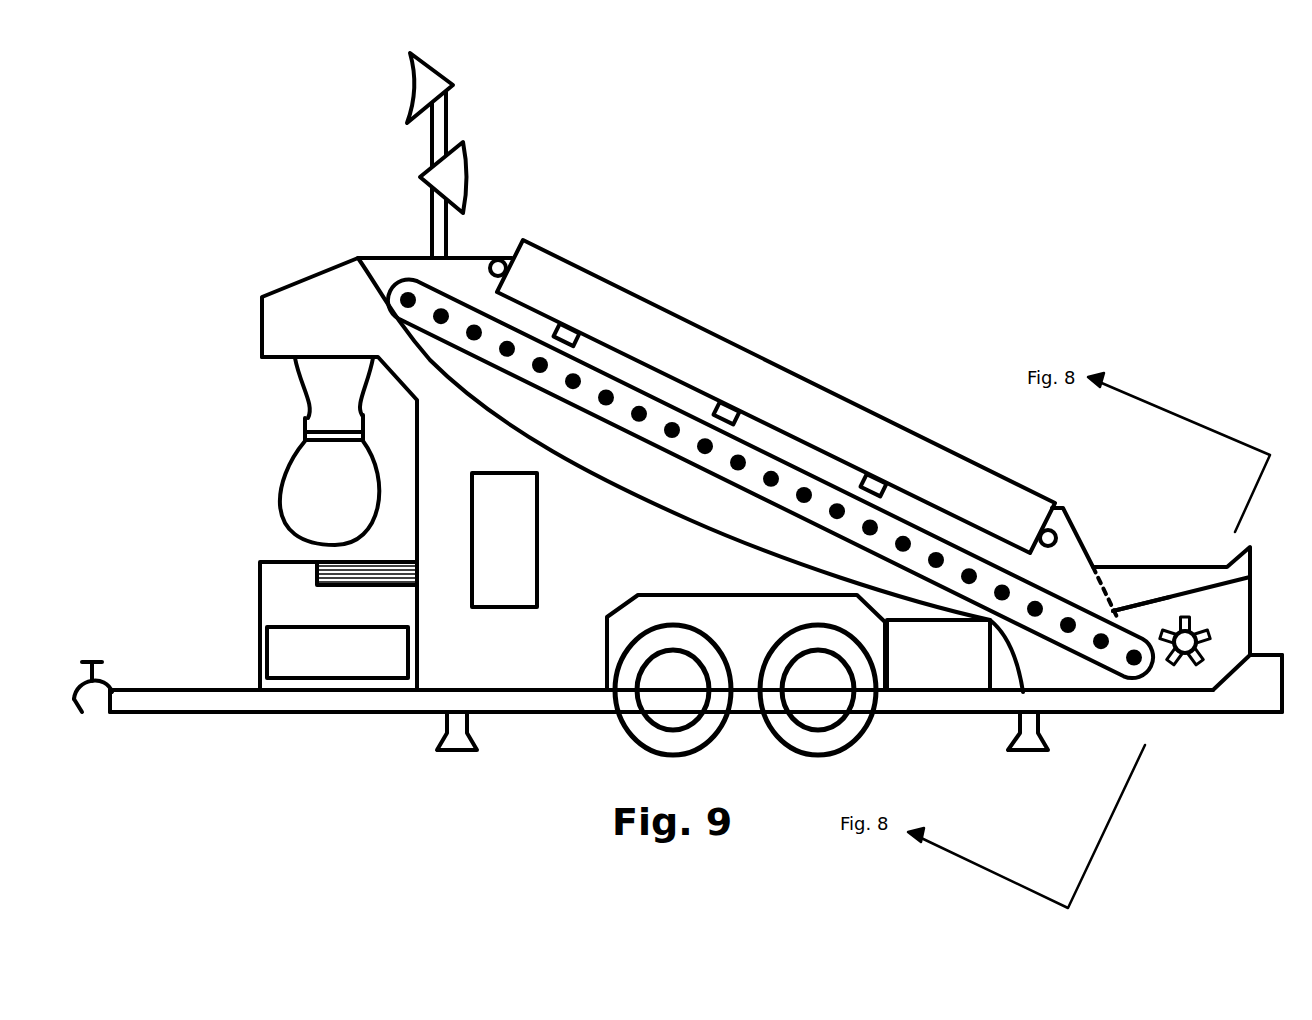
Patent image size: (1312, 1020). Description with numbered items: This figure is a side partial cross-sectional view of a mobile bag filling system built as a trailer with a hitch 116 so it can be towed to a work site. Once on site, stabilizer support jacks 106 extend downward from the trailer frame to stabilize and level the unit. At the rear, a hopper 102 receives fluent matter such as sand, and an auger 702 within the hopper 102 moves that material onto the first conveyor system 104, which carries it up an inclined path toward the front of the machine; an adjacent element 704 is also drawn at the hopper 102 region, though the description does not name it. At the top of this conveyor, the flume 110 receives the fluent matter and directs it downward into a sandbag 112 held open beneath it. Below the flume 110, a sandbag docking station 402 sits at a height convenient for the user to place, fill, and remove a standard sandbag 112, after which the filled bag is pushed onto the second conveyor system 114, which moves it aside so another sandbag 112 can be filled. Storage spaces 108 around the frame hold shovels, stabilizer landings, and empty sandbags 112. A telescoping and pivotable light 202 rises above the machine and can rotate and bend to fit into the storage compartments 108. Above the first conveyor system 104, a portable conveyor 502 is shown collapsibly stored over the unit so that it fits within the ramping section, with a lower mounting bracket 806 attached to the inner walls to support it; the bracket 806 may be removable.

The hopper 102 is at (472, 259).
The first conveyor system 104 is at (775, 480).
The stabilizer support jacks 106 is at (473, 731).
The storage spaces 108 is at (337, 648).
The flume 110 is at (322, 403).
The sandbag 112 is at (327, 497).
The second conveyor system 114 is at (380, 588).
The hitch 116 is at (104, 706).
The telescoping and pivotable lights 202 is at (415, 90).
The sandbag docking station 402 is at (259, 587).
The portable conveyor 502 is at (806, 350).
The auger 702 is at (1183, 668).
The hopper chute 704 is at (1193, 590).
The lower mounting bracket 806 is at (585, 340).